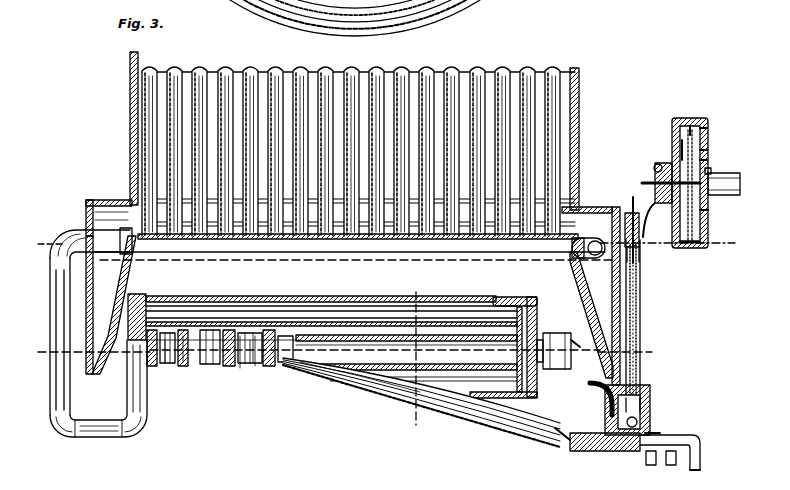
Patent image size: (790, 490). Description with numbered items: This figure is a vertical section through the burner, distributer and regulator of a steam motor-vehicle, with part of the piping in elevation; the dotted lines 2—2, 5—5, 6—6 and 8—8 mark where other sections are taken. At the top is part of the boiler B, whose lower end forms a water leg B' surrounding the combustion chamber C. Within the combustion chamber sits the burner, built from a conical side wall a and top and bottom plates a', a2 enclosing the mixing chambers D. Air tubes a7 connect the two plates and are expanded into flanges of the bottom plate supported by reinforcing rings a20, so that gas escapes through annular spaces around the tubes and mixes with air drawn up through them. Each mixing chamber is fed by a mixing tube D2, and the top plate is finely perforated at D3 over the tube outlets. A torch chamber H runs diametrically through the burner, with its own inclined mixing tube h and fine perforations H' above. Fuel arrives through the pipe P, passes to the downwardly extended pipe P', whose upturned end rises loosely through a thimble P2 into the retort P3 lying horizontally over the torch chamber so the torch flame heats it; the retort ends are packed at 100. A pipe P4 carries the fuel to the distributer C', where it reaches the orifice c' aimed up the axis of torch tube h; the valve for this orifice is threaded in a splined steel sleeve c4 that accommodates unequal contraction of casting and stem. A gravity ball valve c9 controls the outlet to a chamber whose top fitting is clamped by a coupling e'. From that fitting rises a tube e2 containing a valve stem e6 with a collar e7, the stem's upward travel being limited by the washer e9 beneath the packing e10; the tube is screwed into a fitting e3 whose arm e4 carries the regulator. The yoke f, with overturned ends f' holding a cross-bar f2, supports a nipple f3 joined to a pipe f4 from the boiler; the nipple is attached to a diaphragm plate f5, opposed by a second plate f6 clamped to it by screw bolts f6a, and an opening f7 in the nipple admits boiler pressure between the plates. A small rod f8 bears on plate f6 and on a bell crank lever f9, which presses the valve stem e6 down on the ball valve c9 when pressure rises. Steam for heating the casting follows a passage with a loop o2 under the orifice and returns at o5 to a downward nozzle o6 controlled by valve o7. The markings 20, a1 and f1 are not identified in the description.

The fine perforations D3 is at (470, 4).
The boiler B is at (342, 144).
The water leg B' is at (80, 287).
The combustion chamber C is at (357, 302).
The fuel pipe P is at (91, 309).
The section line 2— 2 is at (43, 245).
The downwardly extended pipe P' is at (98, 404).
The thimble P2 is at (130, 352).
The section line 6— 6 is at (343, 355).
The conical side wall a is at (134, 377).
The packing 100 is at (177, 292).
The fine perforations H' is at (331, 304).
The retort P3 is at (353, 303).
The mixing chamber D is at (232, 366).
The valve seat 20 is at (257, 373).
The air tubes a7 is at (258, 366).
The reinforcing rings a20 is at (160, 368).
The top plate a' is at (375, 346).
The torch chamber H is at (406, 352).
The bottom plate a2 is at (478, 361).
The mixing tube D2 is at (466, 405).
The torch mixing tube h is at (368, 381).
The section line 5— 5 is at (413, 357).
The section line 8— 8 is at (700, 440).
The pipe P4 is at (553, 334).
The outlet valve a1 is at (575, 345).
The collar e7 is at (612, 254).
The tube e2 is at (642, 311).
The valve stem e6 is at (642, 340).
The packing e10 is at (630, 215).
The arm e4 is at (654, 205).
The fitting e3 is at (641, 252).
The washer e9 is at (690, 250).
The yoke f is at (667, 169).
The screw bolts f6a is at (696, 126).
The overturned ends f' is at (713, 115).
The diaphragm plate f5 is at (707, 151).
The cross-bar f2 is at (708, 161).
The nipple f3 is at (711, 172).
The pipe f4 is at (745, 181).
The opening f7 is at (708, 211).
The housing base f1 is at (705, 244).
The second diaphragm plate f6 is at (680, 141).
The small rod f8 is at (657, 172).
The bell crank lever f9 is at (646, 184).
The distributing device C' is at (634, 408).
The exterior coupling e' is at (640, 394).
The gravity ball valve c9 is at (639, 422).
The steel sleeve c4 is at (660, 432).
The loop o2 is at (586, 451).
The return passage o5 is at (646, 458).
The nozzle o6 is at (668, 460).
The valve o7 is at (695, 465).
The orifice c' is at (557, 449).